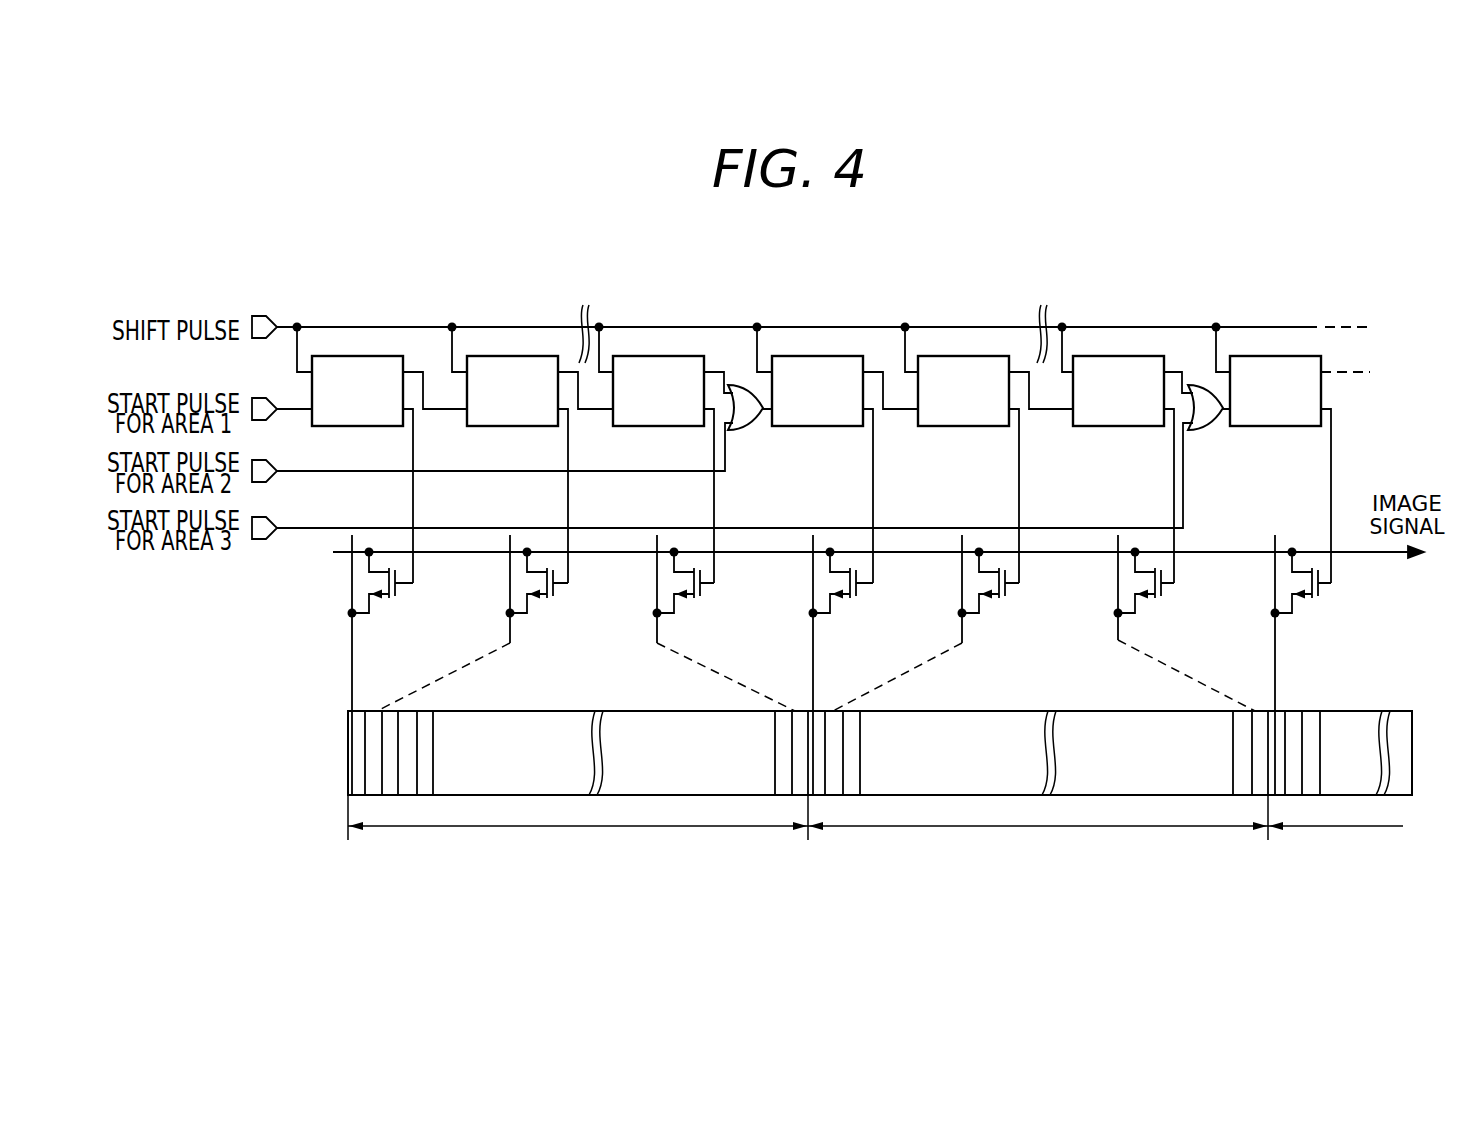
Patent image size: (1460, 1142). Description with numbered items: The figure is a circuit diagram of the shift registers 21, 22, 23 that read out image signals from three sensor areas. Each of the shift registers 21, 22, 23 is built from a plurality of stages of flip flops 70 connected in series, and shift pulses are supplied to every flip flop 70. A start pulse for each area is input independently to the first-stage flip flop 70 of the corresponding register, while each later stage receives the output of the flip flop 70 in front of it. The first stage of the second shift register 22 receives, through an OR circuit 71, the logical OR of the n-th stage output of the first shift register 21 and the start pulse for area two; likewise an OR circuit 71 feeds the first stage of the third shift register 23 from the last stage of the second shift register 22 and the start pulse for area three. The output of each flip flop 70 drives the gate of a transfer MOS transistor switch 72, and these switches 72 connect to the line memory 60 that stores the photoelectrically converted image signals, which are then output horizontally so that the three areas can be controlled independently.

The first shift register 21 is at (753, 278).
The second shift register 22 is at (1210, 278).
The third shift register 23 is at (1222, 278).
The line memory 60 is at (348, 760).
The flip flop 70 is at (1279, 355).
The OR circuit 71 is at (1208, 472).
The transfer MOS transistor switch 72 is at (1333, 630).